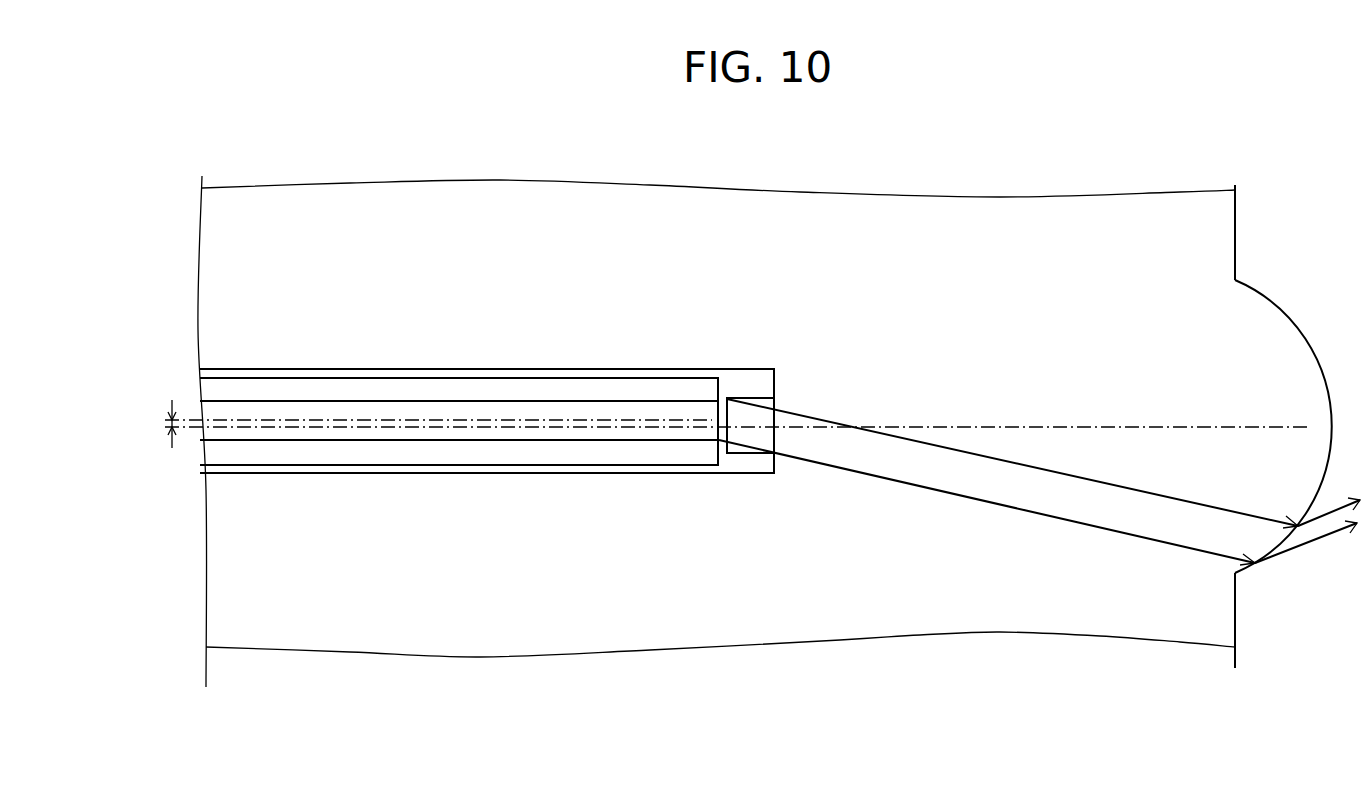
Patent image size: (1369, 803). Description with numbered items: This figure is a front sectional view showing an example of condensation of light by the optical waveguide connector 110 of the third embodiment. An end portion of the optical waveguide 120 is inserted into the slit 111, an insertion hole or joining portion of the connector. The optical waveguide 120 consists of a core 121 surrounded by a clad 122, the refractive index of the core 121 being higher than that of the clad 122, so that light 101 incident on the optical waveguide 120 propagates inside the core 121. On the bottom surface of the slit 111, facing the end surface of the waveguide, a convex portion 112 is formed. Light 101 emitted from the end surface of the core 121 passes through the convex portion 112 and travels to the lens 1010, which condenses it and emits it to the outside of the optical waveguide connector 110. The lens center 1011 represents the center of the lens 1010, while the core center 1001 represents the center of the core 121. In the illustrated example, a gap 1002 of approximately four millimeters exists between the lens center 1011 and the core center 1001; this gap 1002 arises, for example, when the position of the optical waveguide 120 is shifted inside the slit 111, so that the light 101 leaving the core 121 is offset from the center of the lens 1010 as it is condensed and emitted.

The optical waveguide connector 110 is at (853, 618).
The lens 1010 is at (1283, 313).
The lens center 1011 is at (1130, 427).
The slit 111 is at (688, 367).
The convex portion 112 is at (727, 413).
The optical waveguide 120 is at (260, 378).
The core 121 is at (213, 413).
The clad 122 is at (205, 390).
The core center 1001 is at (596, 420).
The gap 1002 is at (165, 424).
The light 101 is at (953, 447).